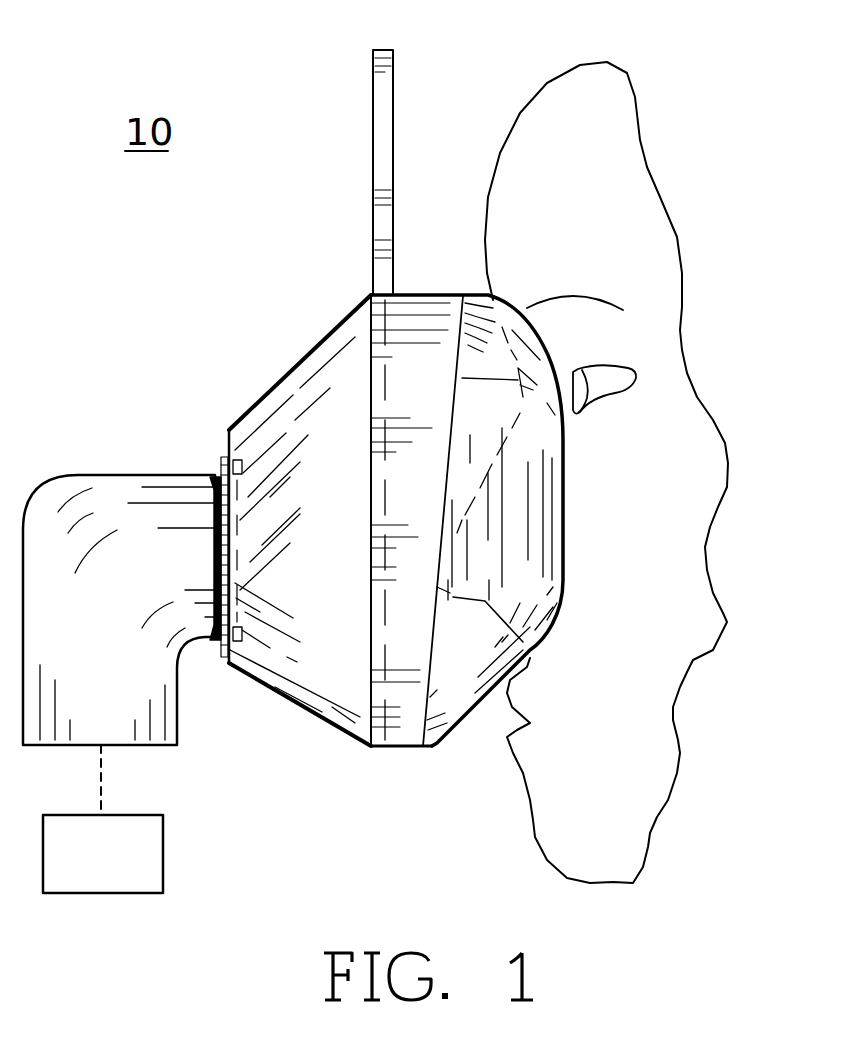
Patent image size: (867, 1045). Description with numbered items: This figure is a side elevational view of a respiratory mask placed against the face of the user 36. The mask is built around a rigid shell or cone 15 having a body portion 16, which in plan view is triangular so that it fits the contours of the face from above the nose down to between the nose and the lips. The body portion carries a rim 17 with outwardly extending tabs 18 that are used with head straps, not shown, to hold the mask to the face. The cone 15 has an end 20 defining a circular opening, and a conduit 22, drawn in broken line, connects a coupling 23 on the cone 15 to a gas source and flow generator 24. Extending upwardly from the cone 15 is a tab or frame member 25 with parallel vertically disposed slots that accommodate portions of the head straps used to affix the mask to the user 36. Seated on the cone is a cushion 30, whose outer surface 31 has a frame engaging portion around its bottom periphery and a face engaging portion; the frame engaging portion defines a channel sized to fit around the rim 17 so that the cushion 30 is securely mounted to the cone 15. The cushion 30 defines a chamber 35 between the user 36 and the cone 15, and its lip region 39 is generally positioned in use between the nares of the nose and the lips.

The rigid shell or cone 15 is at (301, 483).
The body portion 16 is at (358, 300).
The rim 17 is at (372, 614).
The tabs 18 is at (378, 492).
The end 20 is at (222, 455).
The conduit 22 is at (105, 785).
The coupling 23 is at (118, 475).
The gas source and flow generator 24 is at (163, 856).
The tab or frame member 25 is at (394, 72).
The cushion 30 is at (467, 482).
The outer surface 31 is at (432, 294).
The chamber 35 is at (450, 677).
The user 36 is at (650, 163).
The lip region 39 is at (475, 722).